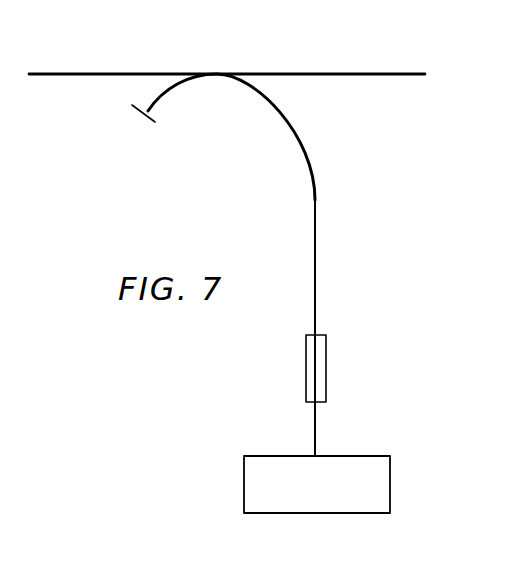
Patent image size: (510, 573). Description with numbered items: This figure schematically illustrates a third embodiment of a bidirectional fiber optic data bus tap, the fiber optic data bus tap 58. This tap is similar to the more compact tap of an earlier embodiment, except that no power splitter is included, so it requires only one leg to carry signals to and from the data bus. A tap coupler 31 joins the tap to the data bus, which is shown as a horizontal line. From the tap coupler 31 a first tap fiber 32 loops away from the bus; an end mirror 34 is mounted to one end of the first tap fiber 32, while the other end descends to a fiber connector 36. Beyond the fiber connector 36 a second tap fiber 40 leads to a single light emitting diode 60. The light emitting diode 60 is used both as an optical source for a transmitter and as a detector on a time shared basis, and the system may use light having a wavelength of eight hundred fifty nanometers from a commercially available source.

The tap coupler 31 is at (211, 58).
The first tap fiber 32 is at (316, 270).
The end mirror 34 is at (142, 117).
The fiber connector 36 is at (327, 376).
The second tap fiber 40 is at (316, 430).
The fiber optic data bus tap 58 is at (213, 148).
The light emitting diode 60 is at (391, 473).